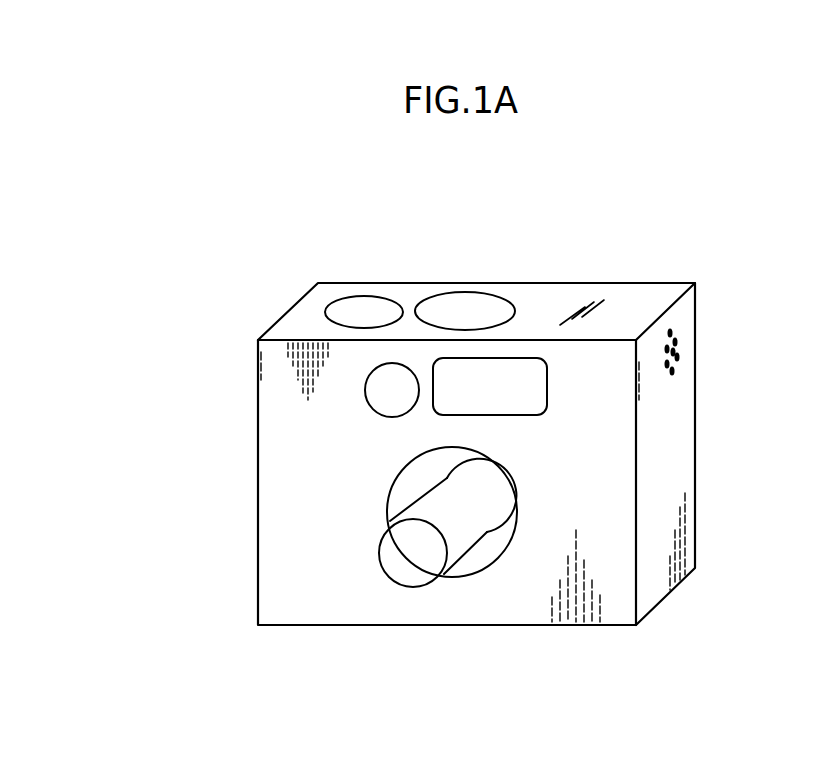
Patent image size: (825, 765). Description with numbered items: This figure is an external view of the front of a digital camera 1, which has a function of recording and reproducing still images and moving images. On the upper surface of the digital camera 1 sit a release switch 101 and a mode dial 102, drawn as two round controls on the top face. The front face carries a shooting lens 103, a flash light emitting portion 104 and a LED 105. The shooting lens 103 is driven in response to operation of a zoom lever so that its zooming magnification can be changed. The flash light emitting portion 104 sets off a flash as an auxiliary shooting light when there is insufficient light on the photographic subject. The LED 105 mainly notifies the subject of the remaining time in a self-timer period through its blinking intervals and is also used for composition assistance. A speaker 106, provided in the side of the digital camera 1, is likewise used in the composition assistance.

The digital camera 1 is at (238, 310).
The release switch 101 is at (363, 305).
The mode dial 102 is at (468, 308).
The shooting lens 103 is at (405, 580).
The flash light emitting portion 104 is at (527, 427).
The LED 105 is at (350, 398).
The speaker 106 is at (678, 348).